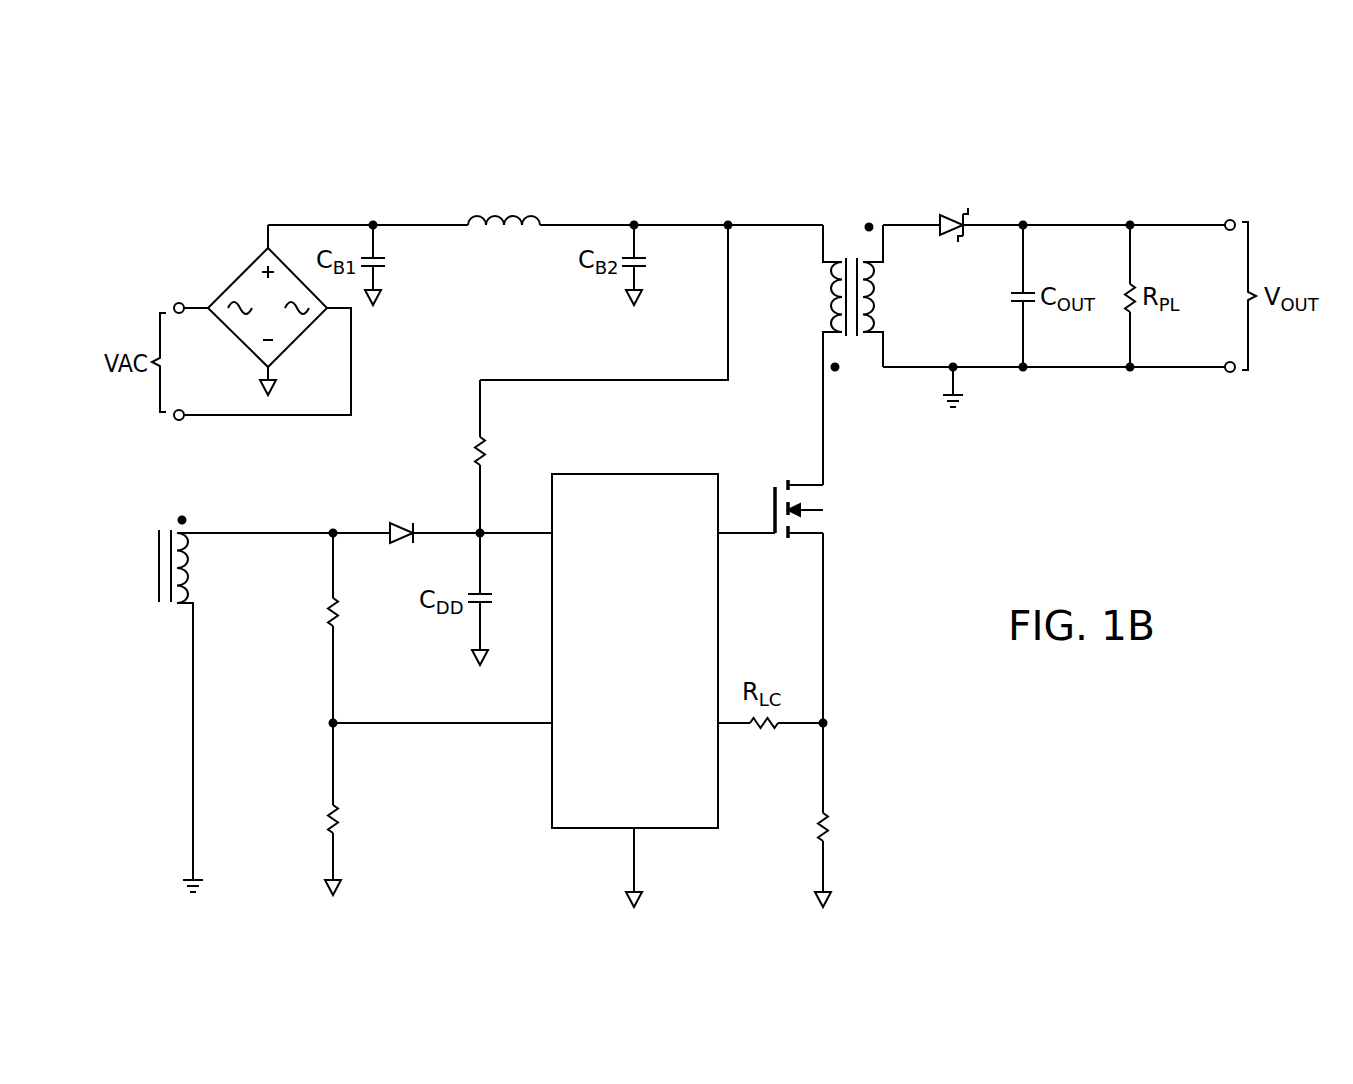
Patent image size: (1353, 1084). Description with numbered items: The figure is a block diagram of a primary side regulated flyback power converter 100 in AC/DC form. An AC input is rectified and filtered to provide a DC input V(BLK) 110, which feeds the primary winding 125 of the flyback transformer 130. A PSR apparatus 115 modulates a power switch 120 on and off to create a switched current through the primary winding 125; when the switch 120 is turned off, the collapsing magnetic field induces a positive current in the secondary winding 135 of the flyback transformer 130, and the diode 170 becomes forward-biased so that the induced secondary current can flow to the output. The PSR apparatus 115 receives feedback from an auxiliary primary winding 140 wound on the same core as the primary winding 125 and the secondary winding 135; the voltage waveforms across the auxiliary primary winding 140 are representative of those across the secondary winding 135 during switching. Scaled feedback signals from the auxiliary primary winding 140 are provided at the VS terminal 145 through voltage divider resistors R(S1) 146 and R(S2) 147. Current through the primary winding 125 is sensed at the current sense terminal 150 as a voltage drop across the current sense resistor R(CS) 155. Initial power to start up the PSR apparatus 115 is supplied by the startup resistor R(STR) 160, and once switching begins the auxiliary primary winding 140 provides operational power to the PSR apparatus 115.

The primary side regulated flyback power converter 100 is at (526, 154).
The DC input V(BLK) 110 is at (725, 222).
The PSR apparatus 115 is at (635, 656).
The power switch 120 is at (775, 500).
The primary winding 125 is at (838, 260).
The flyback transformer 130 is at (855, 313).
The secondary winding 135 is at (866, 336).
The auxiliary primary winding 140 is at (158, 576).
The VS terminal 145 is at (574, 740).
The voltage divider resistor R(S1) 146 is at (341, 612).
The voltage divider resistor R(S2) 147 is at (341, 820).
The current sense (CS) terminal 150 is at (693, 740).
The current sense resistor R(CS) 155 is at (833, 832).
The startup resistor R(STR) 160 is at (487, 452).
The diode 170 is at (951, 215).